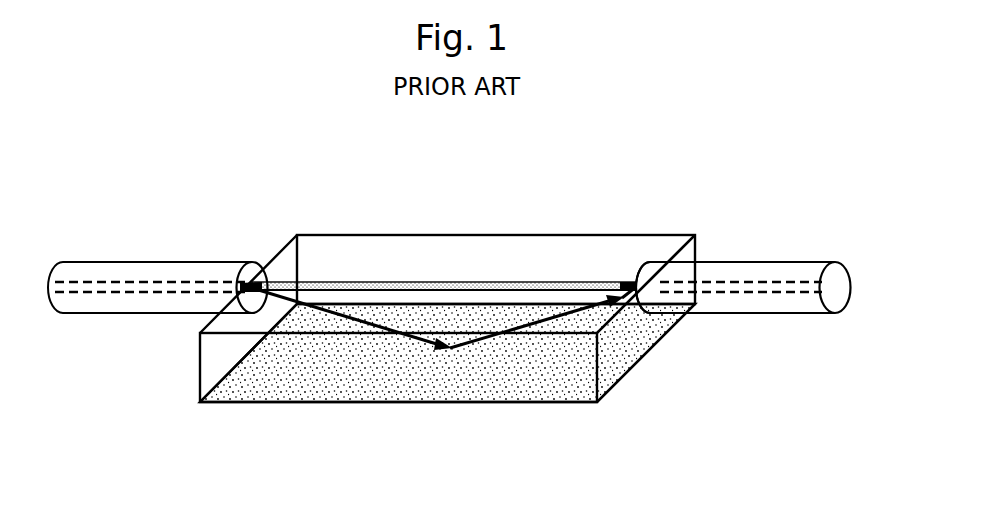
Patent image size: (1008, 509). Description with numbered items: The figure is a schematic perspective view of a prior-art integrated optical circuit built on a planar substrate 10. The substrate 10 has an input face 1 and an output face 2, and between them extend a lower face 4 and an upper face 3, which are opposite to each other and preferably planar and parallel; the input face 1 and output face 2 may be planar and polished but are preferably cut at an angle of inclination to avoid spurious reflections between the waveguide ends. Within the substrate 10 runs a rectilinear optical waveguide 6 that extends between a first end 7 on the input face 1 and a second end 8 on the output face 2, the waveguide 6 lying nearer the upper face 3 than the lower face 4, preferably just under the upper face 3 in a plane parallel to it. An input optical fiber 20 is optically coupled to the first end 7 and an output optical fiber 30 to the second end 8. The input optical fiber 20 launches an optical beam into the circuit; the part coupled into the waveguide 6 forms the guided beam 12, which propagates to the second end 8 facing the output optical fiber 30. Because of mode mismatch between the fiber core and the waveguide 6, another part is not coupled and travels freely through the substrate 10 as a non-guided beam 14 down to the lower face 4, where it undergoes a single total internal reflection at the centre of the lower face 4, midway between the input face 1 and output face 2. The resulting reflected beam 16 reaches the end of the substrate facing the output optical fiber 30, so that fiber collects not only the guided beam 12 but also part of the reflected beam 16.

The input face 1 is at (215, 359).
The output face 2 is at (693, 256).
The upper face 3 is at (442, 247).
The lower face 4 is at (547, 390).
The optical waveguide 6 is at (338, 283).
The first end 7 is at (264, 264).
The second end 8 is at (643, 289).
The planar substrate 10 is at (657, 238).
The guided beam 12 is at (590, 287).
The non-guided beam 14 is at (300, 306).
The reflected beam 16 is at (585, 315).
The input optical fiber 20 is at (107, 267).
The output optical fiber 30 is at (737, 267).